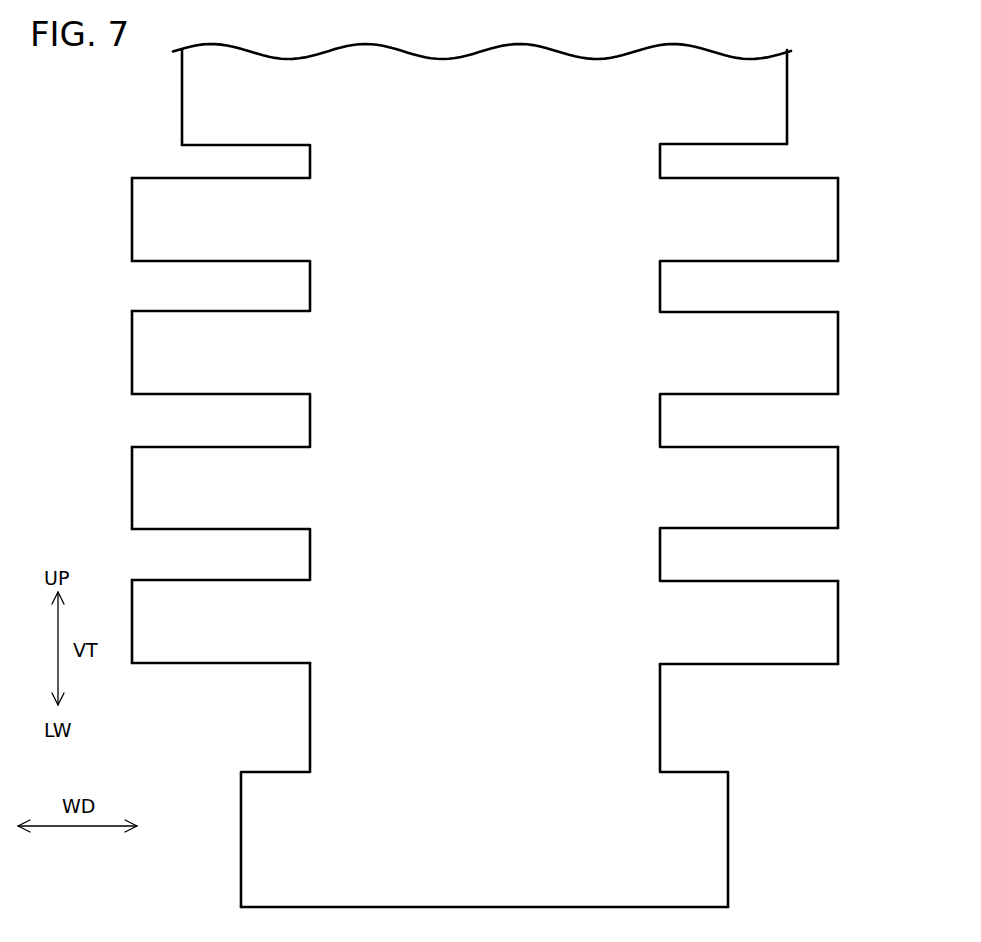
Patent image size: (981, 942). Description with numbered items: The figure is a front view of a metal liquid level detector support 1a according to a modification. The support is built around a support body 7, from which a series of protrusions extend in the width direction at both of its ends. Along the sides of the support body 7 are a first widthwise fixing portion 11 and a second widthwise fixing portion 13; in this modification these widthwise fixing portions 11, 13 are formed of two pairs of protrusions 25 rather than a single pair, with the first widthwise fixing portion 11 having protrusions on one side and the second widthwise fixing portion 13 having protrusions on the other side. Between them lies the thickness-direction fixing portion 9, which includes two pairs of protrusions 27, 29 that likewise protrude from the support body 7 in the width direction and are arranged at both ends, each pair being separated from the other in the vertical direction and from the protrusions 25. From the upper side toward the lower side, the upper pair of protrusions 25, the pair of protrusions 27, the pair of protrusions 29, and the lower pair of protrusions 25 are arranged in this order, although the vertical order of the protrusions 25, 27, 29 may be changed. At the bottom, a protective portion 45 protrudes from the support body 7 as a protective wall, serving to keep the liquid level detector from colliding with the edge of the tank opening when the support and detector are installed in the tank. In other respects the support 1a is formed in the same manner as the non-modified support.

The liquid level detector support 1a is at (800, 109).
The protrusions 25 is at (740, 700).
The first widthwise fixing portion 11 is at (130, 212).
The second widthwise fixing portion 13 is at (840, 211).
The thickness-direction fixing portion 9 is at (130, 325).
The protrusions 27 is at (130, 363).
The protrusions 29 is at (130, 500).
The protective portion 45 is at (241, 838).
The support body 7 is at (436, 888).